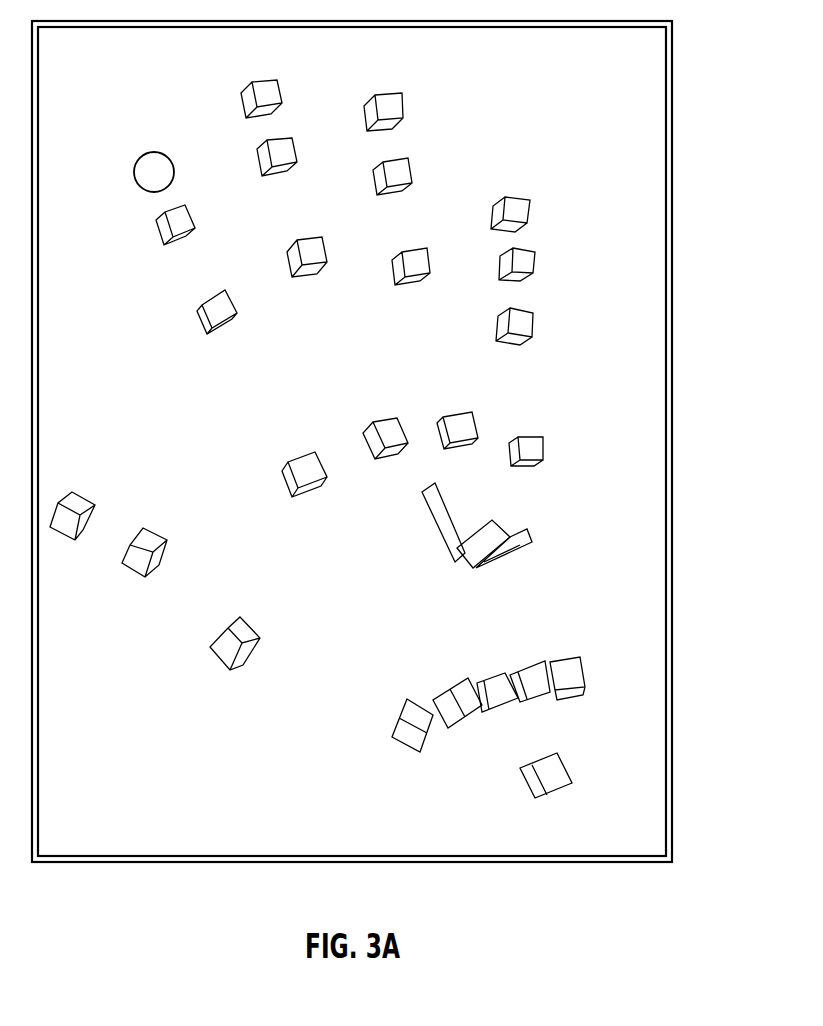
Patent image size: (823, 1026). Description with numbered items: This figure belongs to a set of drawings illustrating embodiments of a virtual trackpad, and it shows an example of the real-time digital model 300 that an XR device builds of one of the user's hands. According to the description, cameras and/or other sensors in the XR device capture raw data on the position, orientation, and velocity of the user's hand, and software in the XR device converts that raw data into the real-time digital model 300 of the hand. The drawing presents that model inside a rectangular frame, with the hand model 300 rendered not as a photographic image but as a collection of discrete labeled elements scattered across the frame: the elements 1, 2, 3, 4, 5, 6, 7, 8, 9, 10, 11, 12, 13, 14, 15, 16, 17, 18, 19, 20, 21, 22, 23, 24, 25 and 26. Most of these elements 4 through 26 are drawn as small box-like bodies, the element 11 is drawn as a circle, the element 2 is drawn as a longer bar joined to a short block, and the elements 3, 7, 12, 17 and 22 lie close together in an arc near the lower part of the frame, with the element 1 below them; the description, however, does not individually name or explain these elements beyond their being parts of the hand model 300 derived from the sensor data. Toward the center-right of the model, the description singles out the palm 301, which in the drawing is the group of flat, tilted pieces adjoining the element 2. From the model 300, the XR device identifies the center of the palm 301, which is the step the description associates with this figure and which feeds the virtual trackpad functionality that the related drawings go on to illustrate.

The real-time digital model of the hand 300 is at (650, 202).
The palm 301 is at (533, 537).
The hand segment 1 is at (546, 789).
The hand segment 2 is at (466, 539).
The hand segment 3 is at (412, 741).
The hand segment 4 is at (239, 653).
The hand segment 5 is at (144, 568).
The hand segment 6 is at (72, 536).
The hand segment 7 is at (457, 721).
The hand segment 8 is at (304, 488).
The hand segment 9 is at (217, 333).
The hand segment 10 is at (175, 246).
The hand segment 11 is at (144, 156).
The hand segment 12 is at (497, 709).
The hand segment 13 is at (386, 456).
The hand segment 14 is at (312, 274).
The hand segment 15 is at (277, 179).
The hand segment 16 is at (254, 82).
The hand segment 17 is at (530, 697).
The hand segment 18 is at (458, 445).
The hand segment 19 is at (413, 283).
The hand segment 20 is at (392, 194).
The hand segment 21 is at (380, 95).
The hand segment 22 is at (571, 693).
The hand segment 23 is at (527, 468).
The hand segment 24 is at (516, 343).
The hand segment 25 is at (535, 264).
The hand segment 26 is at (528, 214).